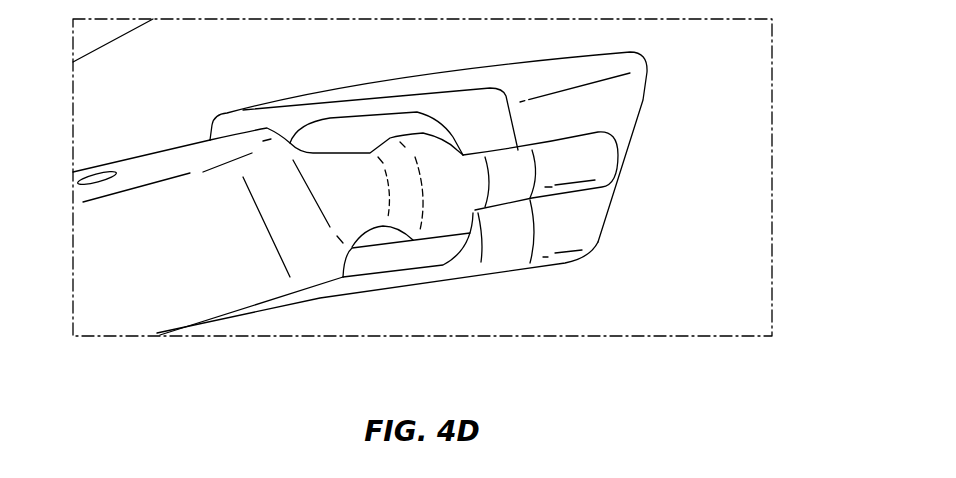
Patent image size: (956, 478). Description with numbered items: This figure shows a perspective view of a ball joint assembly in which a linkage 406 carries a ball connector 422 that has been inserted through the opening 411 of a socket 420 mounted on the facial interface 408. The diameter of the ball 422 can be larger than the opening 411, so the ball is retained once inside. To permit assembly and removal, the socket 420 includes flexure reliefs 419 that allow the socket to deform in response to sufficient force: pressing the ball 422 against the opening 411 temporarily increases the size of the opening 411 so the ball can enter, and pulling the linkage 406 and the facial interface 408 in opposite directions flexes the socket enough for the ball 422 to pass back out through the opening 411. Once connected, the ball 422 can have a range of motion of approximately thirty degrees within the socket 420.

The linkage 406 is at (175, 305).
The facial interface 408 is at (670, 305).
The opening 411 is at (347, 149).
The flexure reliefs 419 is at (577, 169).
The socket 420 is at (465, 118).
The ball connector 422 is at (447, 217).